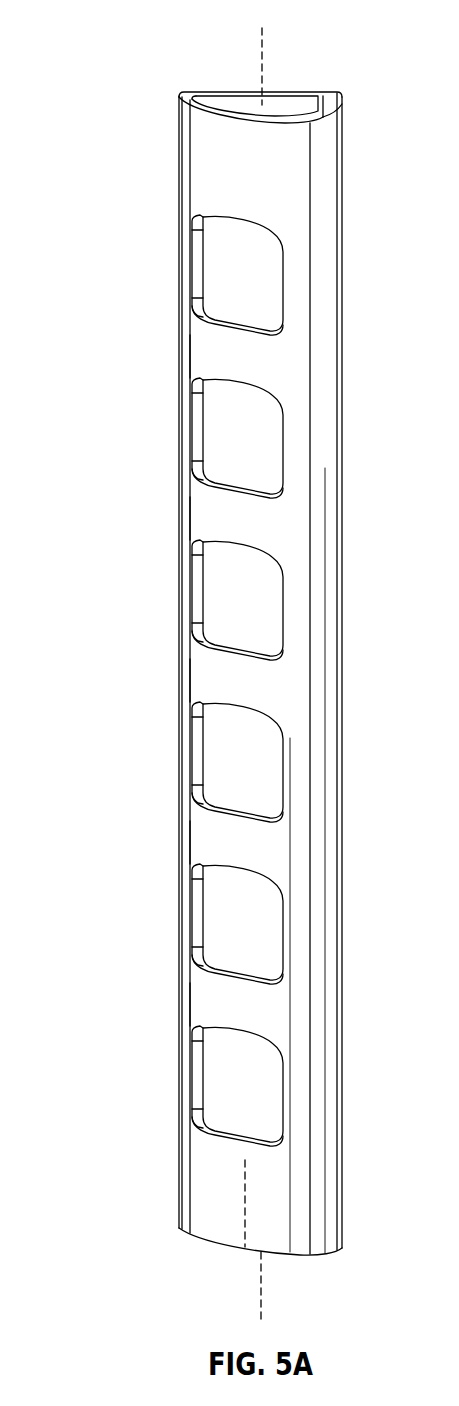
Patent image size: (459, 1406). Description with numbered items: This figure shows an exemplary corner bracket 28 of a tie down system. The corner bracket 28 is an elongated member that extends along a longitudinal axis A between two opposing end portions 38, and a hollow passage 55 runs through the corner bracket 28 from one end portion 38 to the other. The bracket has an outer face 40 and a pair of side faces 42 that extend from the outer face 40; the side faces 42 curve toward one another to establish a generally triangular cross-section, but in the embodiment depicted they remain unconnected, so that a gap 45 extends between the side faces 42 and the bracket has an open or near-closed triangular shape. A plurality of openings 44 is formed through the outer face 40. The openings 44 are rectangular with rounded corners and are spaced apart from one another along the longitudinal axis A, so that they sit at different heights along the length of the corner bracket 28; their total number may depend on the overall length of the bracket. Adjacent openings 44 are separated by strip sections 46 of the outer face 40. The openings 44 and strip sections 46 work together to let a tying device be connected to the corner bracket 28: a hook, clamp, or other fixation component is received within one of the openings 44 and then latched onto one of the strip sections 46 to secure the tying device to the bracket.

The corner bracket 28 is at (220, 660).
The end portions 38 is at (155, 108).
The outer face 40 is at (245, 634).
The side faces 42 is at (218, 88).
The openings 44 is at (218, 258).
The gap 45 is at (322, 92).
The strip sections 46 is at (210, 347).
The hollow passage 55 is at (283, 108).
The longitudinal axis A is at (262, 28).